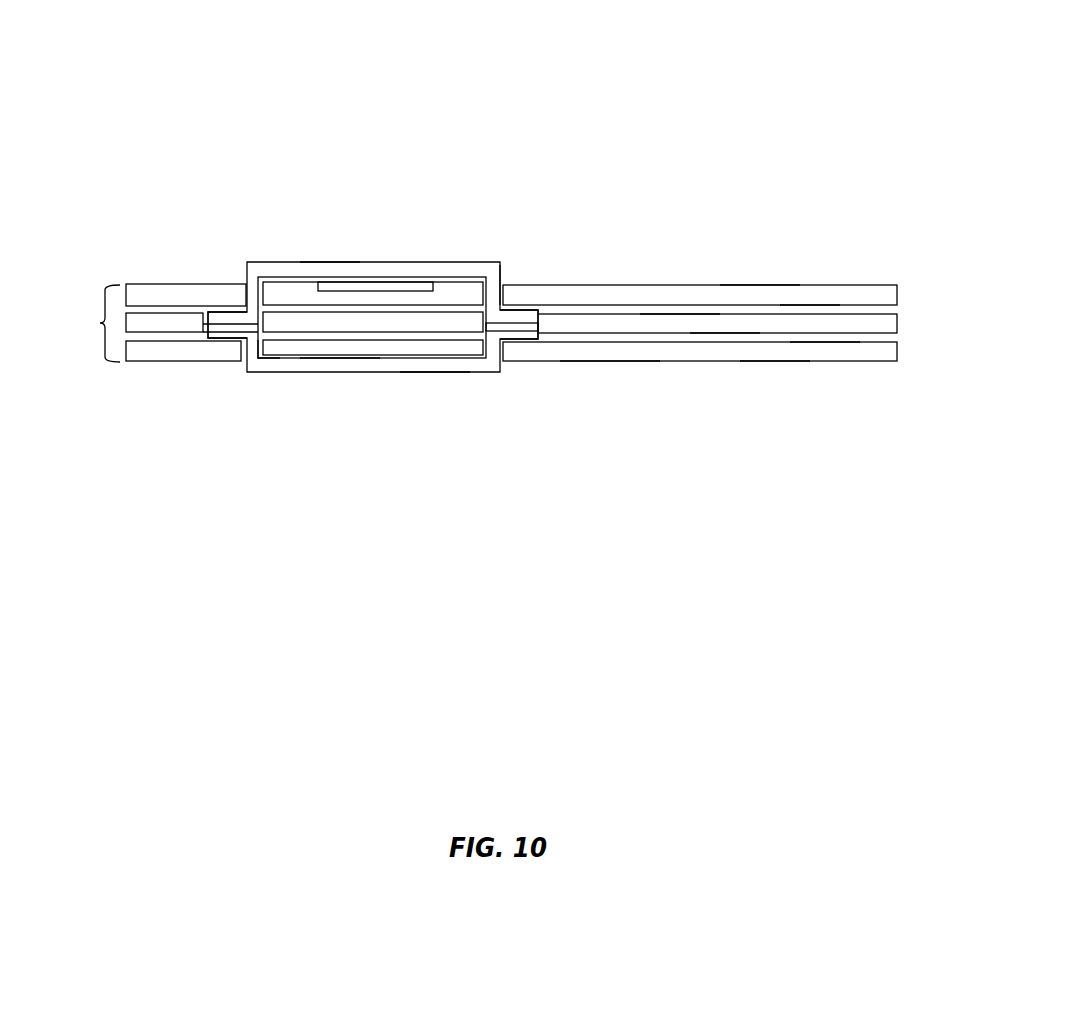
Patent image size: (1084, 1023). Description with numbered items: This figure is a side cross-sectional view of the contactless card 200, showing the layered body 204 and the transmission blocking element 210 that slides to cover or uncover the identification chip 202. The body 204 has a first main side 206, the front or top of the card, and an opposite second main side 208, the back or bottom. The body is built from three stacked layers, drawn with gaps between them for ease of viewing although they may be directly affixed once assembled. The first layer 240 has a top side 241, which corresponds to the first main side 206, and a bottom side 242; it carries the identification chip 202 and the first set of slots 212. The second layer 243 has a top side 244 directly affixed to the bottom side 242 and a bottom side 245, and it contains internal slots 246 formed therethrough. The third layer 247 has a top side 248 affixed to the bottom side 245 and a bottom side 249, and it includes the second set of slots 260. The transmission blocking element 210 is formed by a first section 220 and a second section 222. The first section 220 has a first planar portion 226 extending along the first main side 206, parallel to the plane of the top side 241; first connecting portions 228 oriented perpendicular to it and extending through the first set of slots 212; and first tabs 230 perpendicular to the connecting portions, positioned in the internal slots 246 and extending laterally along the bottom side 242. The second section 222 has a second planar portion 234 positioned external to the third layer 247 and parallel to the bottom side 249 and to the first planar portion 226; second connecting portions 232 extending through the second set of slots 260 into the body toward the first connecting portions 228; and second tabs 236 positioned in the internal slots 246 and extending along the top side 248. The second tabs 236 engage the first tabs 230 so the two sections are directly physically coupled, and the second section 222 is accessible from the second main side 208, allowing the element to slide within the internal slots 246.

The contactless card 200 is at (463, 128).
The identification chip 202 is at (371, 285).
The body 204 is at (100, 323).
The first main side 206 is at (731, 323).
The second main side 208 is at (607, 362).
The transmission blocking element 210 is at (295, 262).
The first set of slots 212 is at (505, 294).
The first section 220 is at (443, 275).
The second section 222 is at (437, 372).
The first planar portion 226 is at (325, 272).
The first connecting portions 228 is at (497, 278).
The first tabs 230 is at (233, 318).
The second connecting portions 232 is at (256, 345).
The second planar portion 234 is at (344, 363).
The second tabs 236 is at (225, 331).
The first layer 240 is at (889, 296).
The top side of the first layer 241 is at (755, 285).
The bottom side of the first layer 242 is at (808, 302).
The second layer 243 is at (885, 325).
The top side of the second layer 244 is at (673, 308).
The bottom side of the second layer 245 is at (717, 333).
The internal slots 246 is at (542, 320).
The third layer 247 is at (885, 348).
The top side of the third layer 248 is at (822, 343).
The bottom side of the third layer 249 is at (775, 362).
The second set of slots 260 is at (503, 348).